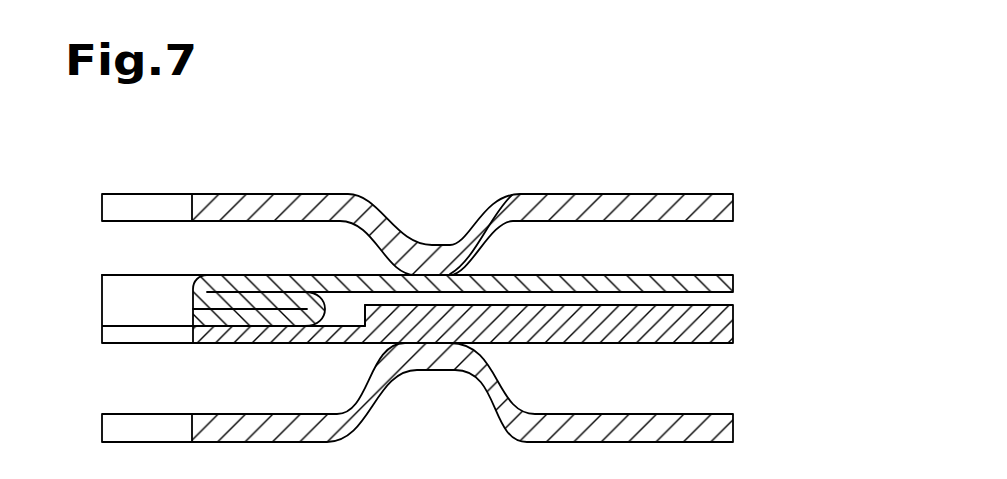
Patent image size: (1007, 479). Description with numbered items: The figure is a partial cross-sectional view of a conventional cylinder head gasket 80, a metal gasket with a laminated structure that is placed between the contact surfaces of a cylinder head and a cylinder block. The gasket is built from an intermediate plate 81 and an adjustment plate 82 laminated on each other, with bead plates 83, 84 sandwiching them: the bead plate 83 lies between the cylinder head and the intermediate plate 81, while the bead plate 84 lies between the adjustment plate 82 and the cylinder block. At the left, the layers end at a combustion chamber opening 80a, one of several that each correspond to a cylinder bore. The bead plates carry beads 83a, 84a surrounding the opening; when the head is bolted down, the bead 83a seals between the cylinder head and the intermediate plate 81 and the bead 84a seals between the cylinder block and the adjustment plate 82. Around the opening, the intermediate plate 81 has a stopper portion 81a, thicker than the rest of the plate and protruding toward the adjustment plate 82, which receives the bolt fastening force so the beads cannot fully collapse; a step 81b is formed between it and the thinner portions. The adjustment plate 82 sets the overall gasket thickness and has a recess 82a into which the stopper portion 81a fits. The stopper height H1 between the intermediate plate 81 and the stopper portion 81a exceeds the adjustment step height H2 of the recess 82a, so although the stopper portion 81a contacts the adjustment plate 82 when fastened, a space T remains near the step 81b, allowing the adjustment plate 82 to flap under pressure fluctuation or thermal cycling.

The cylinder head gasket 80 is at (755, 168).
The combustion chamber opening 80a is at (108, 433).
The intermediate plate 81 is at (445, 309).
The stopper portion 81a is at (253, 326).
The step 81b is at (330, 309).
The adjustment plate 82 is at (445, 349).
The recess 82a is at (353, 320).
The bead plate 83 is at (444, 235).
The bead 83a is at (486, 252).
The bead plate 84 is at (444, 395).
The bead 84a is at (494, 370).
The space T is at (612, 298).
The stopper height H1 is at (816, 280).
The adjustment step height H2 is at (849, 295).